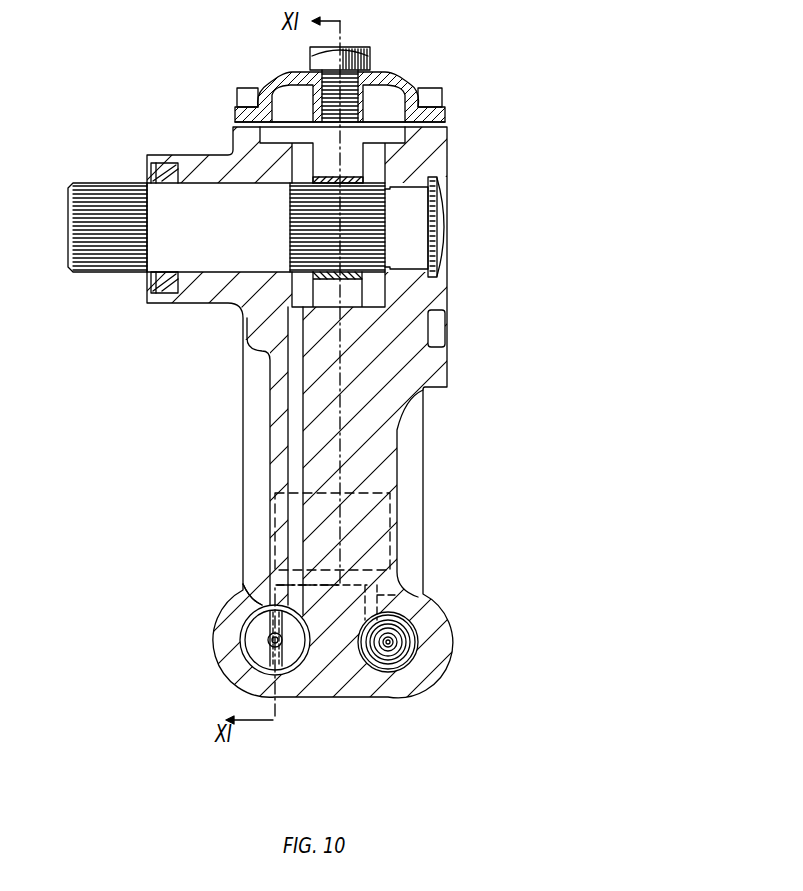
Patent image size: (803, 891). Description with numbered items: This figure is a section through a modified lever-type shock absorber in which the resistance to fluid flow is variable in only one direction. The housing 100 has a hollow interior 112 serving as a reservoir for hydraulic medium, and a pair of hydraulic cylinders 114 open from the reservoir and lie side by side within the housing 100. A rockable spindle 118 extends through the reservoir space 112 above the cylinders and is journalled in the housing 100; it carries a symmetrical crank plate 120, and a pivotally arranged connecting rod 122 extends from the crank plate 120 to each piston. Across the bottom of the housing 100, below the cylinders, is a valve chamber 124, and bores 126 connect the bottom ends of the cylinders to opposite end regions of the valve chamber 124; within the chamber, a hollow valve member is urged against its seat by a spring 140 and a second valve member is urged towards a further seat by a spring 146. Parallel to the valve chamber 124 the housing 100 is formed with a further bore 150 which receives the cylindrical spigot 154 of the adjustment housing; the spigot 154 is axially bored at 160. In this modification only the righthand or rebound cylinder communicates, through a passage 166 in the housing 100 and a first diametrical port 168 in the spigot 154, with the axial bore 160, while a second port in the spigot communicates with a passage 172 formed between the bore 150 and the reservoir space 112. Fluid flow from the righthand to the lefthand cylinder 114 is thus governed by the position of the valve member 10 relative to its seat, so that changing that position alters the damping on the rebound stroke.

The valve member 10 is at (250, 688).
The housing 100 is at (243, 448).
The hollow interior 112 is at (382, 133).
The hydraulic cylinder 114 is at (418, 512).
The rockable spindle 118 is at (110, 190).
The crank plate 120 is at (302, 292).
The connecting rod 122 is at (357, 181).
The valve chamber 124 is at (415, 625).
The bore 126 is at (397, 583).
The spring 140 is at (412, 642).
The spring 146 is at (398, 648).
The further bore 150 is at (242, 620).
The cylindrical spigot 154 is at (290, 653).
The axial bore 160 is at (247, 632).
The passage 166 is at (255, 592).
The first diametrical port 168 is at (267, 632).
The passage 172 is at (295, 397).